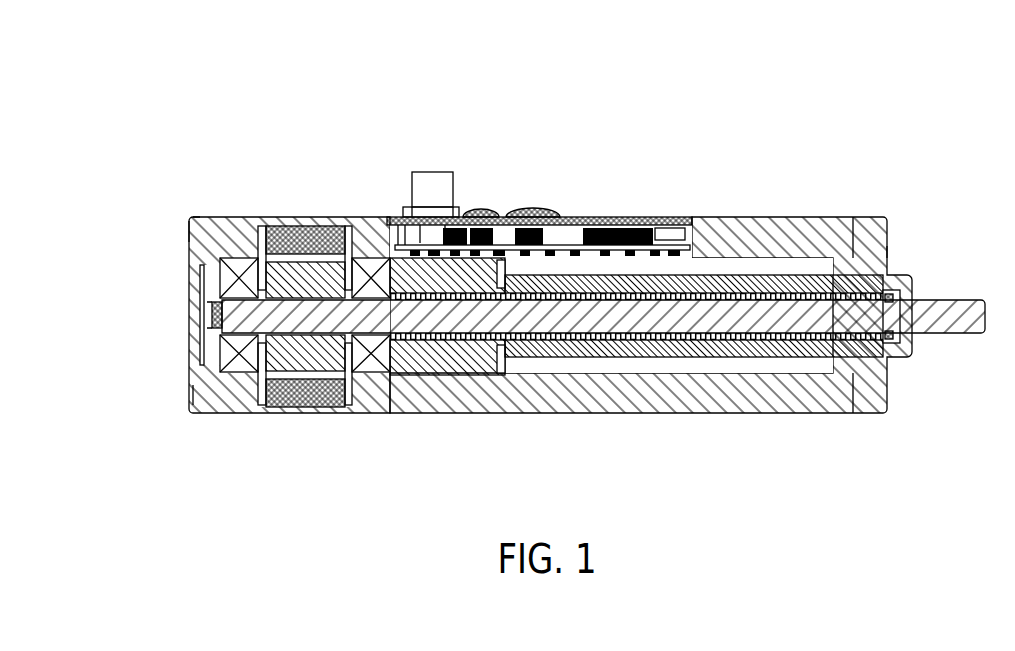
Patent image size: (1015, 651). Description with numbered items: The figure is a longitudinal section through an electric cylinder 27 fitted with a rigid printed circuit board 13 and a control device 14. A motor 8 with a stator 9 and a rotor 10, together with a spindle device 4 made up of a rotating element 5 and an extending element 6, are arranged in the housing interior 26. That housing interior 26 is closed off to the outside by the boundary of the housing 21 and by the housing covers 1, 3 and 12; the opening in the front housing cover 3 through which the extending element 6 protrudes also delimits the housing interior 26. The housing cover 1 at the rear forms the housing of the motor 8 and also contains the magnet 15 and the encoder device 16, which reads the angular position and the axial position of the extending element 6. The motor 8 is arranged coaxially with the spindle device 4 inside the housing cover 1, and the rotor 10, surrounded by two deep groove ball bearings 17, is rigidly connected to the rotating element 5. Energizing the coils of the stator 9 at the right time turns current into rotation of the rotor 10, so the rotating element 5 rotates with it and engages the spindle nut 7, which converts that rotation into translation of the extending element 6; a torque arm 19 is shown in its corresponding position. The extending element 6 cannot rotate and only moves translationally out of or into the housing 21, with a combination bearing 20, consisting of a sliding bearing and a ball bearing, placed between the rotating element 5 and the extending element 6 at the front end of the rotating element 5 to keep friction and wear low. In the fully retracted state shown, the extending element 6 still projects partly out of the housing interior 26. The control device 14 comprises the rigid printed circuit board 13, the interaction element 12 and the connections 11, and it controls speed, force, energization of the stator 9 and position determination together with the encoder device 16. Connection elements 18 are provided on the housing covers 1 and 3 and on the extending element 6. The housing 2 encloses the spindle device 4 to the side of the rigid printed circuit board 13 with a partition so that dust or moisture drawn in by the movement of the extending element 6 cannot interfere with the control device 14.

The housing cover 1 is at (198, 217).
The housing 2 is at (761, 400).
The front housing cover 3 is at (868, 217).
The spindle device 4 is at (621, 350).
The rotating element 5 is at (596, 312).
The extending element 6 is at (644, 350).
The spindle nut 7 is at (442, 355).
The motor 8 is at (296, 258).
The stator 9 is at (277, 252).
The rotor 10 is at (313, 277).
The connections 11 is at (431, 170).
The interaction element 12 is at (597, 218).
The rigid printed circuit board 13 is at (644, 228).
The control device 14 is at (536, 185).
The magnet 15 is at (212, 317).
The encoder device 16 is at (200, 302).
The deep groove ball bearings 17 is at (243, 345).
The connection elements 18 is at (189, 236).
The torque arm 19 is at (495, 373).
The combination bearing 20 is at (891, 338).
The housing 21 is at (194, 395).
The housing interior 26 is at (680, 225).
The electric cylinder 27 is at (167, 203).